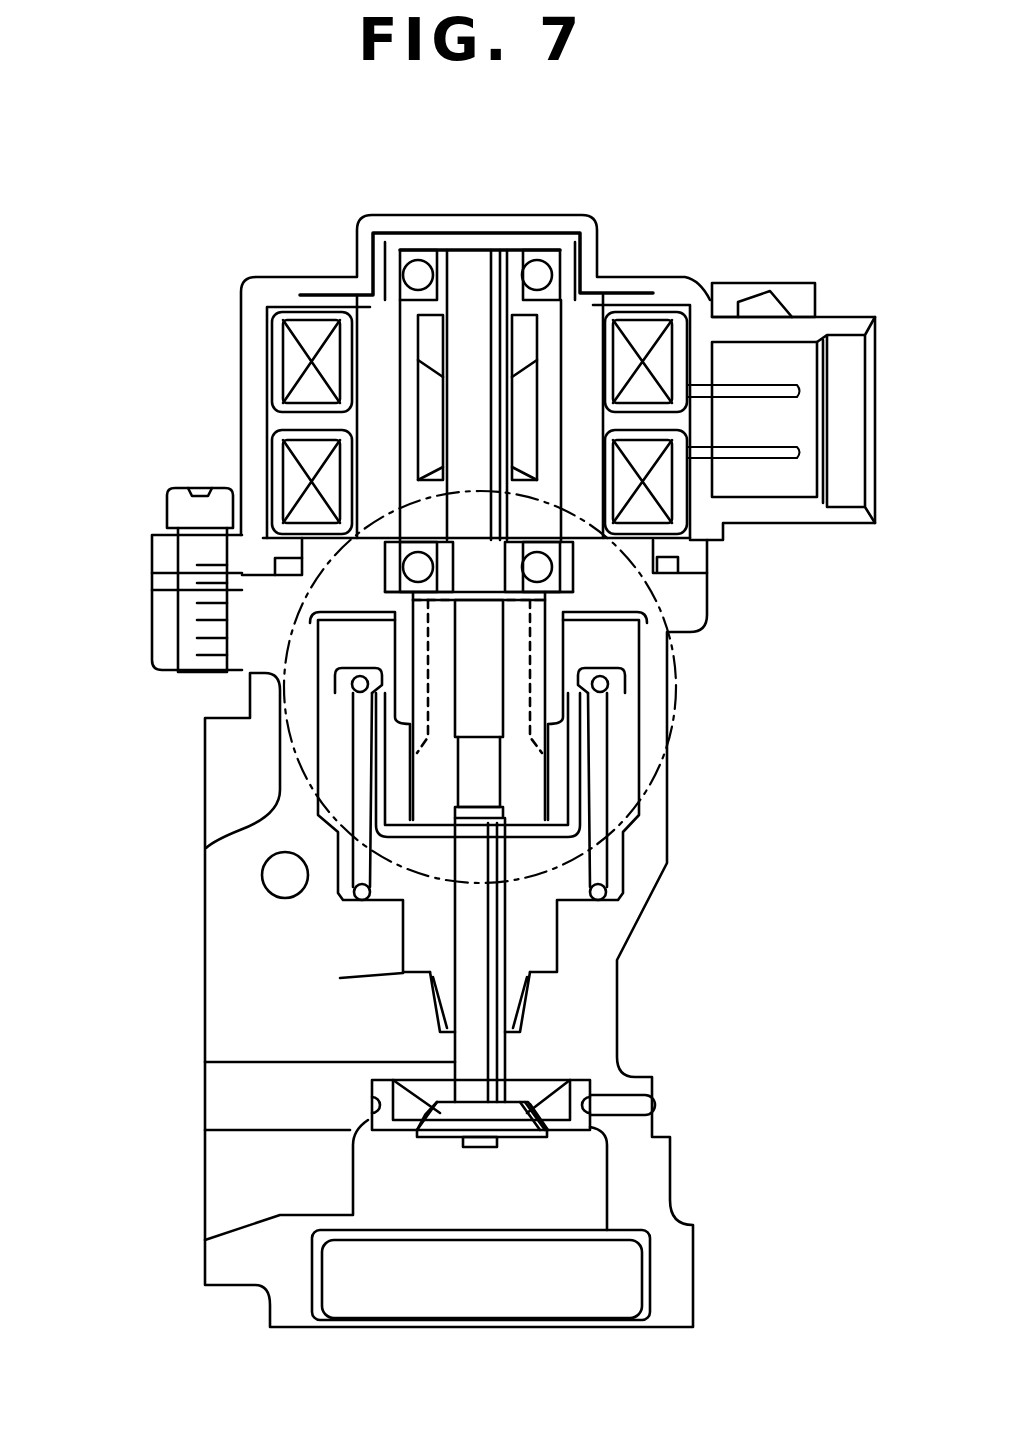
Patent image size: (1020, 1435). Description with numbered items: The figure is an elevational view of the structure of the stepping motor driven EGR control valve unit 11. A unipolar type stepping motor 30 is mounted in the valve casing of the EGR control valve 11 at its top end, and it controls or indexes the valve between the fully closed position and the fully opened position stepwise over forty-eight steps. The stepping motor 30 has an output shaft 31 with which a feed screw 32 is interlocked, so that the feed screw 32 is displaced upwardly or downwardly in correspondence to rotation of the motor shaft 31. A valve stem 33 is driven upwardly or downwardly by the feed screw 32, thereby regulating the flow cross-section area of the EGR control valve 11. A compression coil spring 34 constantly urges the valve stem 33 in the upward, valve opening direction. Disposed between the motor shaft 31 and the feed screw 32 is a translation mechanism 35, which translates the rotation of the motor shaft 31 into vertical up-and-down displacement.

The EGR control valve unit 11 is at (170, 891).
The stepping motor 30 is at (595, 303).
The output shaft 31 is at (443, 420).
The feed screw 32 is at (507, 677).
The valve stem 33 is at (508, 1053).
The coil spring 34 is at (598, 848).
The translation mechanism 35 is at (677, 685).